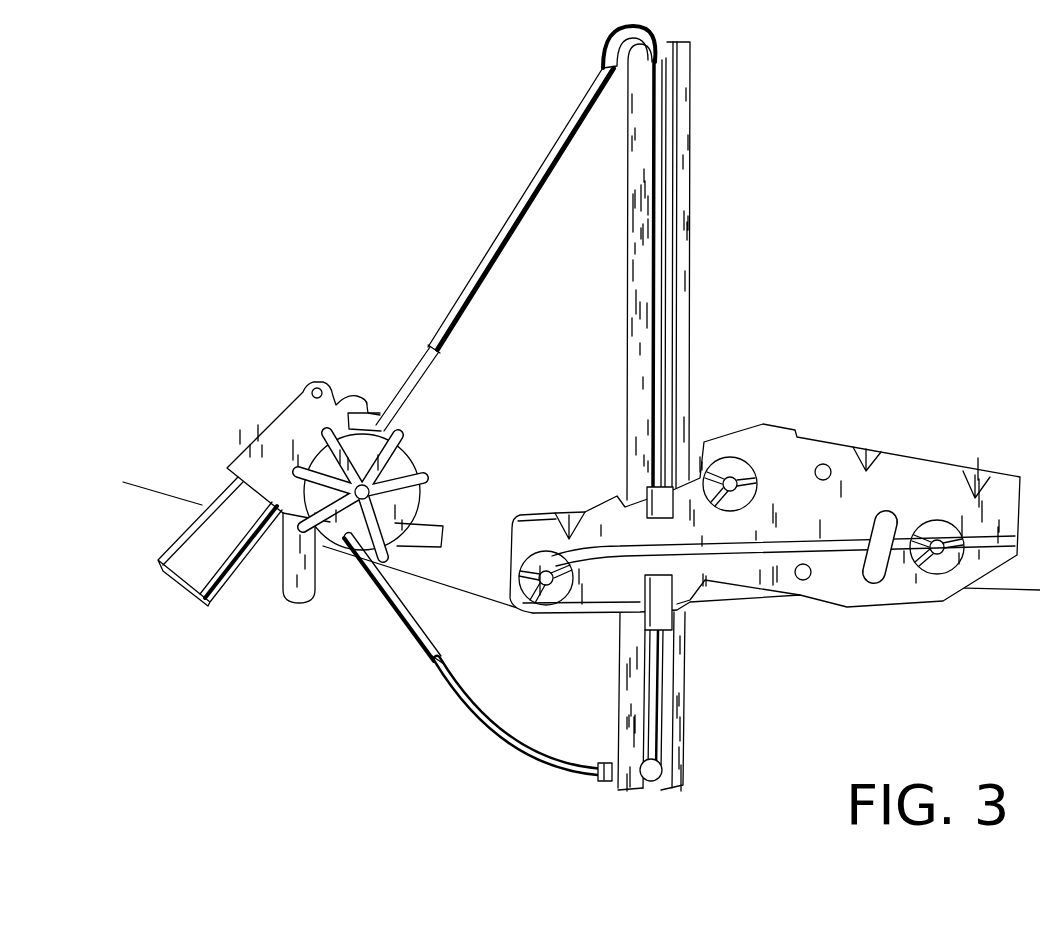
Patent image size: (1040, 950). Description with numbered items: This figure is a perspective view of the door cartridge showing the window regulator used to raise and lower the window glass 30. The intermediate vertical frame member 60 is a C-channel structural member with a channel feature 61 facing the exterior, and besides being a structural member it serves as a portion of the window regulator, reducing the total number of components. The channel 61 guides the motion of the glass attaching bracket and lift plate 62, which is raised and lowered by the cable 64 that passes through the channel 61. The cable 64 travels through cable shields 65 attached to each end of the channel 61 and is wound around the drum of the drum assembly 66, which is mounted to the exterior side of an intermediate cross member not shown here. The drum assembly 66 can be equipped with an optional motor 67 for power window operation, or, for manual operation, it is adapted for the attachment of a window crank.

The window glass 30 is at (520, 607).
The intermediate vertical frame member 60 is at (628, 184).
The channel feature 61 is at (652, 208).
The glass attaching bracket and lift plate 62 is at (868, 446).
The cable 64 is at (660, 253).
The cable shields 65 is at (498, 238).
The drum assembly 66 is at (408, 453).
The motor 67 is at (187, 527).